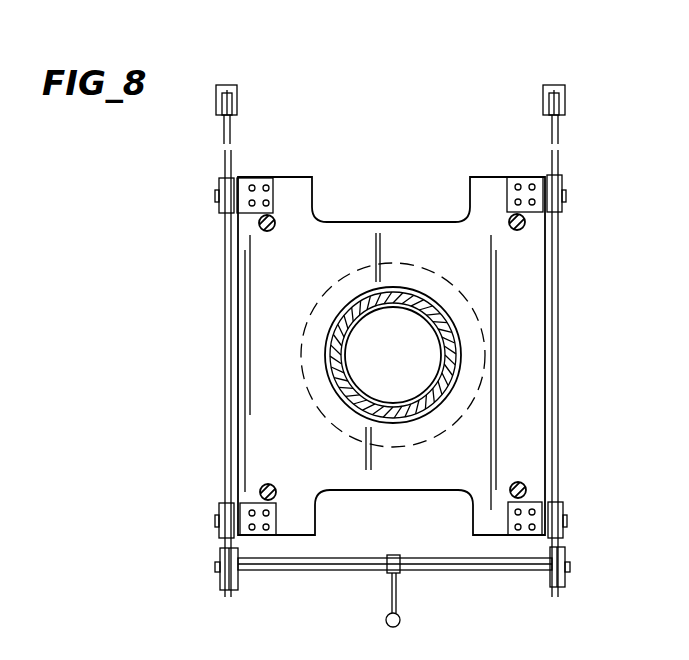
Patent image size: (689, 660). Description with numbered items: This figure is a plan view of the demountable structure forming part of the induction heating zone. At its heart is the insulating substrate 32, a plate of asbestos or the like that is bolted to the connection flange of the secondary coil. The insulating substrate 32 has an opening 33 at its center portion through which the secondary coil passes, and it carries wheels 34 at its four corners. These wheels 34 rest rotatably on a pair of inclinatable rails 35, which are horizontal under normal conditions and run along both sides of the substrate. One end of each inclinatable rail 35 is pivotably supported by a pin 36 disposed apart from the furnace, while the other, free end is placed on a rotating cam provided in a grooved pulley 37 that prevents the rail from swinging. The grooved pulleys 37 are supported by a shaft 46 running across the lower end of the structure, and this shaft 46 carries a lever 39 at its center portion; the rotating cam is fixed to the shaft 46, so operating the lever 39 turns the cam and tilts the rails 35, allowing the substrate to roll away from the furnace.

The insulating substrate 32 is at (248, 336).
The opening 33 is at (345, 310).
The wheels 34 is at (218, 196).
The inclinatable rails 35 is at (226, 436).
The pin 36 is at (217, 98).
The grooved pulley 37 is at (218, 566).
The lever 39 is at (397, 598).
The shaft 46 is at (335, 572).